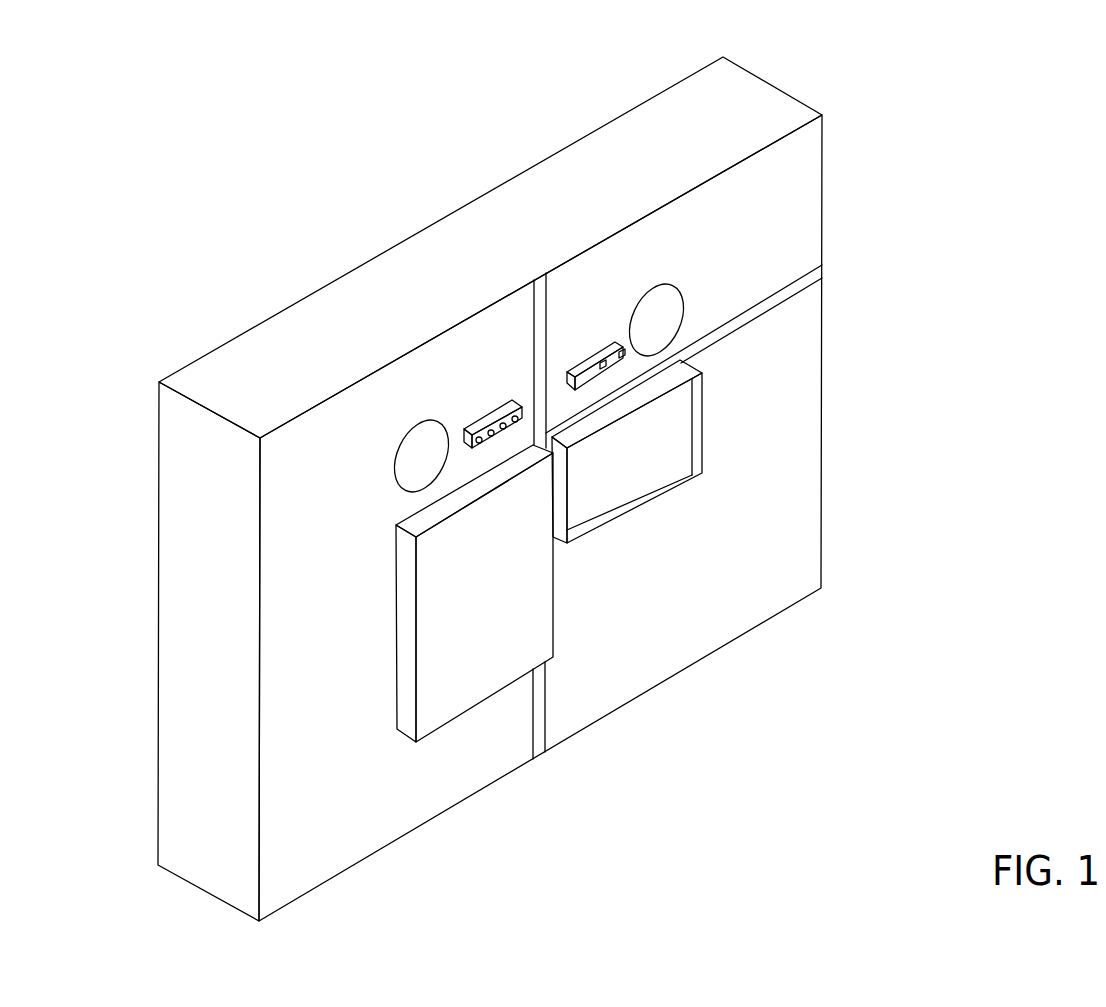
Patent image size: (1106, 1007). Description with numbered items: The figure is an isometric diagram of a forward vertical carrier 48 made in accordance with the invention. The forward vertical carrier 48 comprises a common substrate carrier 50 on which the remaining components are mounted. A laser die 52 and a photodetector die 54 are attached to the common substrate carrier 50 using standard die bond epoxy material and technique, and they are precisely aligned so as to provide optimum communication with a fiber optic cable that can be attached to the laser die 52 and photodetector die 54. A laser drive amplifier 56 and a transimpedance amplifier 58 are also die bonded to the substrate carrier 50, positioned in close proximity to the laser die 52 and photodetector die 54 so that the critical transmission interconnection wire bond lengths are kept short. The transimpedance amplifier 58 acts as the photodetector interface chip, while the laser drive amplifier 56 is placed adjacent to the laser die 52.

The forward vertical carrier 48 is at (540, 484).
The common substrate carrier 50 is at (731, 108).
The laser die 52 is at (482, 417).
The photodetector die 54 is at (593, 362).
The laser drive amplifier 56 is at (466, 657).
The transimpedance amplifier 58 is at (638, 460).